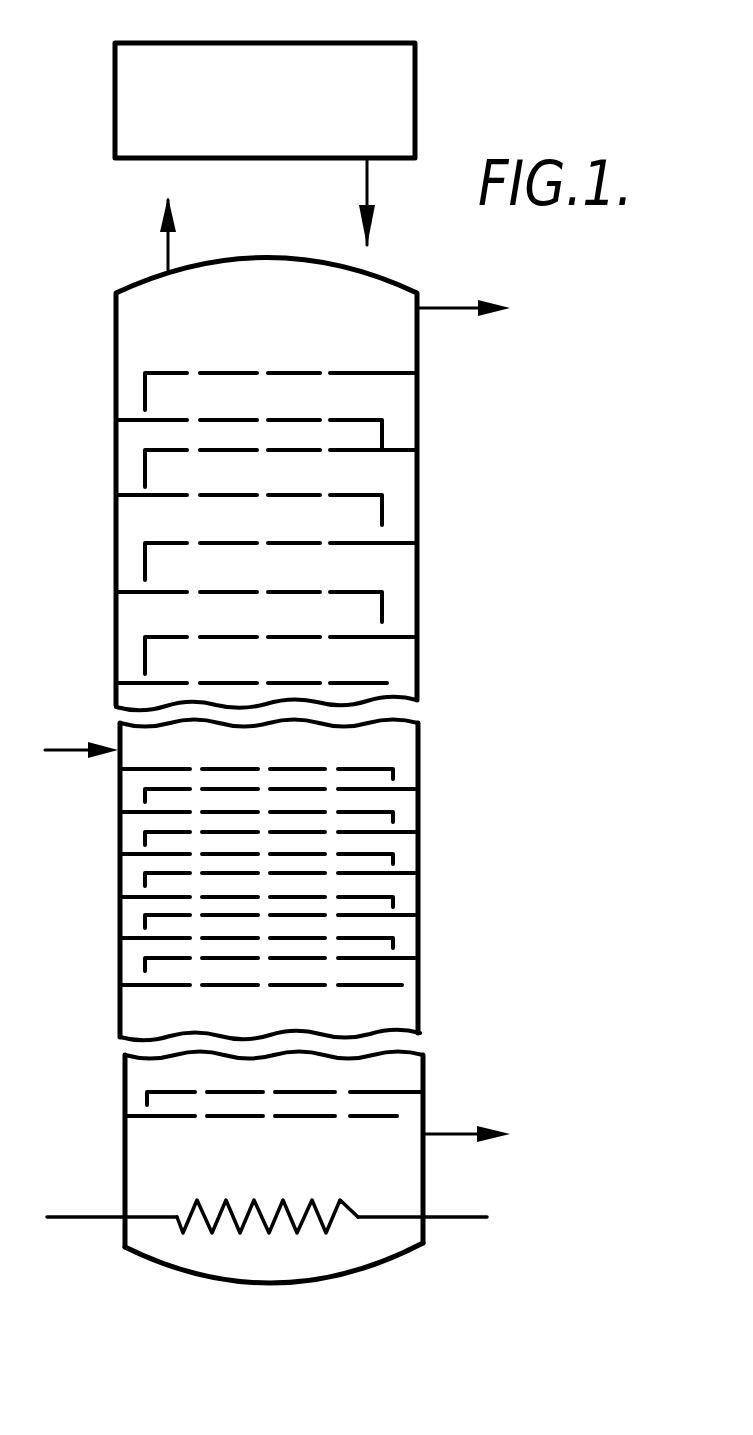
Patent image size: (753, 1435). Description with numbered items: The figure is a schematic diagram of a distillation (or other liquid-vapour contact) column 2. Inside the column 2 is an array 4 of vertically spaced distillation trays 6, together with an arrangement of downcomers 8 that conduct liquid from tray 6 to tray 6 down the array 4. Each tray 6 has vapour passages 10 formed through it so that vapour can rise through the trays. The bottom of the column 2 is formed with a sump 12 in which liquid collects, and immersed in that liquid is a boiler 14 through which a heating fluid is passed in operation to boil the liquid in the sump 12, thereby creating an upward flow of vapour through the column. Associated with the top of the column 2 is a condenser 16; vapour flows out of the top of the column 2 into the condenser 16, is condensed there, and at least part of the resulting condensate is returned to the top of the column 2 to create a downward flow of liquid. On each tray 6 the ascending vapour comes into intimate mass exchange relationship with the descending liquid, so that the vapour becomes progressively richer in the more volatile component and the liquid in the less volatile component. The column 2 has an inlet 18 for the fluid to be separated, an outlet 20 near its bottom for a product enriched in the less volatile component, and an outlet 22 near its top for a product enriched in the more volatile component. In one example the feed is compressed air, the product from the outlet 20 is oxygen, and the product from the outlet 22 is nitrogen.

The distillation column 2 is at (100, 498).
The array 4 is at (158, 535).
The distillation tray 6 is at (167, 370).
The downcomer 8 is at (392, 603).
The vapour passage 10 is at (327, 373).
The sump 12 is at (190, 1187).
The boiler 14 is at (317, 1247).
The condenser 16 is at (263, 123).
The inlet 18 is at (52, 750).
The outlet 20 is at (450, 1137).
The outlet 22 is at (458, 305).